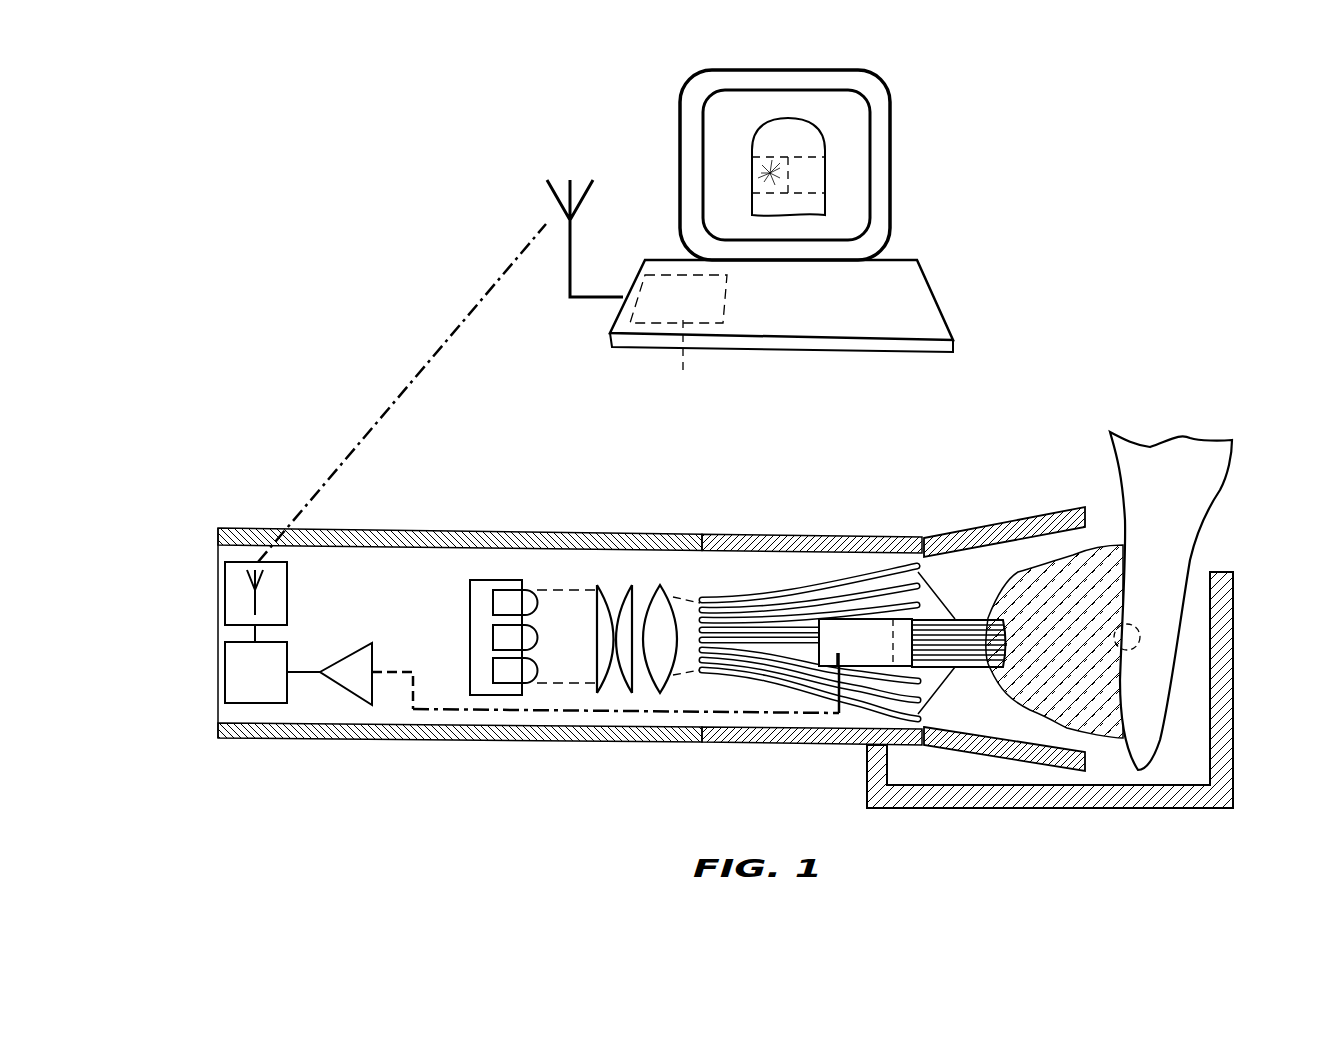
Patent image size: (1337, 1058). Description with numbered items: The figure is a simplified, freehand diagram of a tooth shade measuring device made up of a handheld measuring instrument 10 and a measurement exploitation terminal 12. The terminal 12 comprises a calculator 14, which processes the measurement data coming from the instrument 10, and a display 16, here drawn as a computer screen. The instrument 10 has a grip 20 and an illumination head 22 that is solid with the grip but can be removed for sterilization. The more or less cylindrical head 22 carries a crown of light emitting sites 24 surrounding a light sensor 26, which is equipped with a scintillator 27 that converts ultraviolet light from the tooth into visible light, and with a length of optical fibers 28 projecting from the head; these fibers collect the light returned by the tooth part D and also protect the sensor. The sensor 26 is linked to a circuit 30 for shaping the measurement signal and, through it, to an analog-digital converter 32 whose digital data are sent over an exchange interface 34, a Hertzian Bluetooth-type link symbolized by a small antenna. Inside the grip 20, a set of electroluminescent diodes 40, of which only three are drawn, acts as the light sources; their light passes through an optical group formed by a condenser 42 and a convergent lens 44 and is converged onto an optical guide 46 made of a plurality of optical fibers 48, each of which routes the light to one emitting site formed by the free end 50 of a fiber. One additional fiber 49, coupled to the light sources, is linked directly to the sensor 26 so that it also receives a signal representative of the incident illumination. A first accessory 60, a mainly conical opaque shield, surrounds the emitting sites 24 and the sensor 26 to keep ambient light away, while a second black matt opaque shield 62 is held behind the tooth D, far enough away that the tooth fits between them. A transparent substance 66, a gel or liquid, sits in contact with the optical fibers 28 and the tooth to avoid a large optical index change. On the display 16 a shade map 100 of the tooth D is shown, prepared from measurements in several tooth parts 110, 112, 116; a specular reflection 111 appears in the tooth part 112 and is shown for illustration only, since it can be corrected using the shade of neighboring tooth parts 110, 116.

The handheld measuring instrument 10 is at (218, 482).
The measurement exploitation terminal 12 is at (893, 188).
The calculator 14 is at (681, 374).
The display 16 is at (848, 121).
The grip 20 is at (437, 530).
The illumination head 22 is at (748, 536).
The light emitting sites 24 is at (931, 572).
The light sensor 26 is at (842, 628).
The scintillator 27 is at (900, 653).
The length of optical fibers 28 is at (966, 655).
The circuit for shaping the measurement signal 30 is at (348, 697).
The analog-digital converter 32 is at (225, 673).
The exchange interface 34 is at (225, 597).
The set of electroluminescent diodes 40 is at (500, 696).
The condenser 42 is at (615, 692).
The convergent lens 44 is at (660, 693).
The optical guide 46 is at (730, 682).
The optical fibers 48 is at (793, 692).
The fiber 49 is at (808, 652).
The free end of a fiber 50 is at (910, 560).
The first accessory (opaque shield) 60 is at (998, 517).
The opaque shield 62 is at (1236, 642).
The transparent substance 66 is at (1098, 745).
The shade map 100 is at (752, 137).
The tooth part 110 is at (795, 140).
The specular reflection 111 is at (760, 180).
The tooth part 112 is at (752, 166).
The tooth part 116 is at (812, 165).
The tooth part D is at (1153, 704).